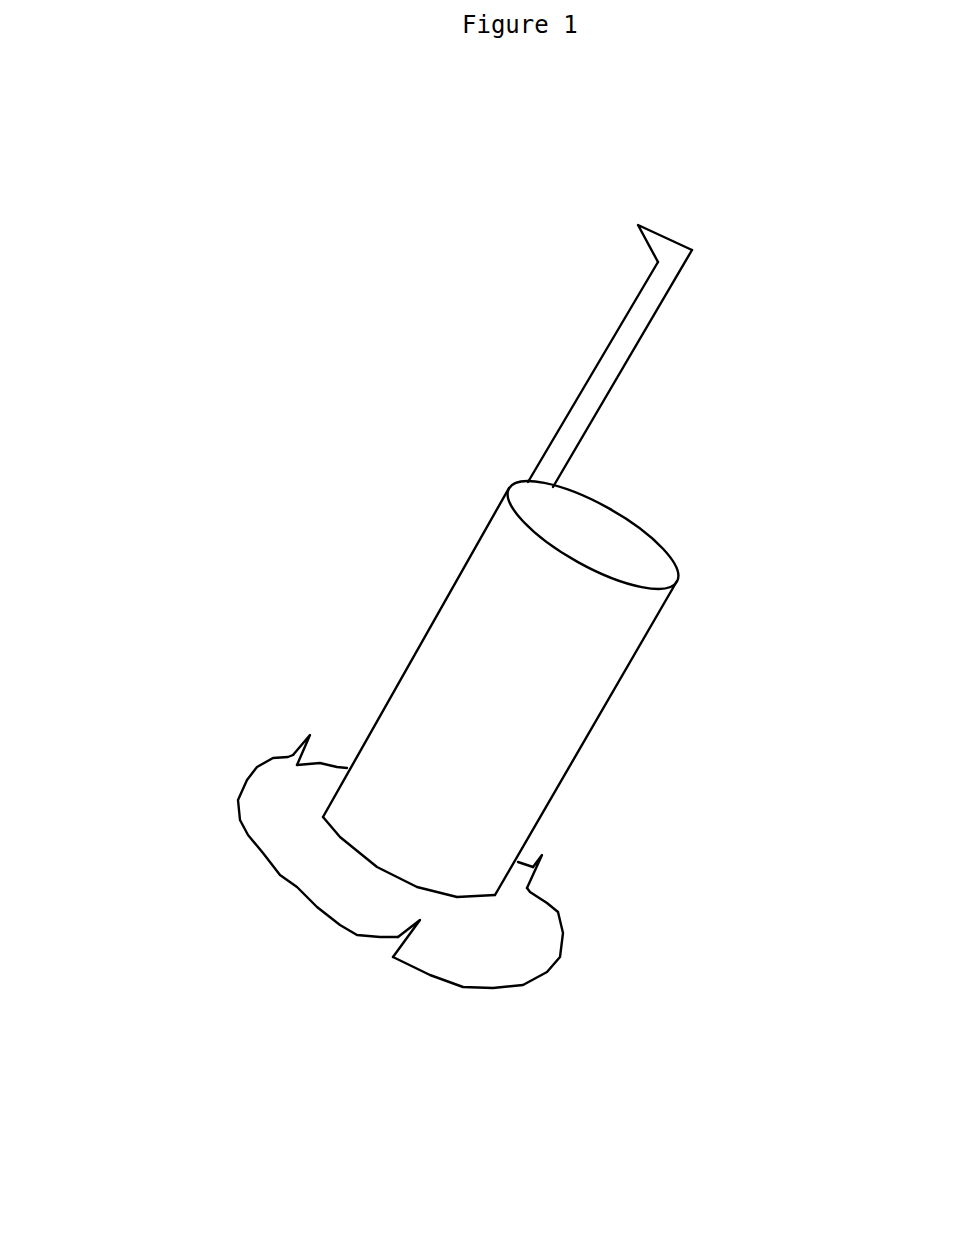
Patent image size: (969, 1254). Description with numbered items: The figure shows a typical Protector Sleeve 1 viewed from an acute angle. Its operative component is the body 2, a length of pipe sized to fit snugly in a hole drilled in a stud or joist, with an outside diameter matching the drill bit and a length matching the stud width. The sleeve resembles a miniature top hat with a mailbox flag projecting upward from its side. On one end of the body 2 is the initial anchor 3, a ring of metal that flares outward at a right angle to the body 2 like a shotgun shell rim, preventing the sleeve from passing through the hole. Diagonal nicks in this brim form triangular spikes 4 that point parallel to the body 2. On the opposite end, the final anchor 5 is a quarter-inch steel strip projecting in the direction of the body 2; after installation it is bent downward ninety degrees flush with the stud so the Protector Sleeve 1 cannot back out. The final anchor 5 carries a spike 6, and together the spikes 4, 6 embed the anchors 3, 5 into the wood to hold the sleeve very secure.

The Protector Sleeve 1 is at (263, 412).
The body 2 is at (540, 722).
The initial anchor 3 is at (305, 853).
The spikes 4 is at (293, 753).
The final anchor 5 is at (588, 403).
The spikes 6 is at (652, 247).